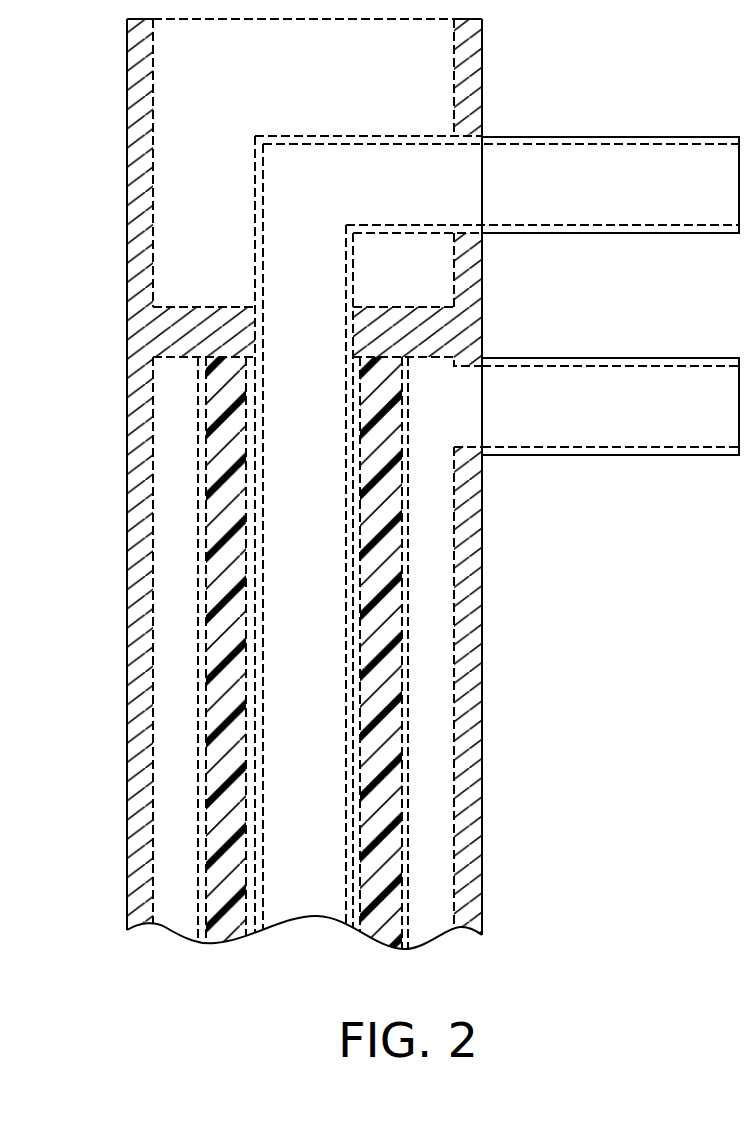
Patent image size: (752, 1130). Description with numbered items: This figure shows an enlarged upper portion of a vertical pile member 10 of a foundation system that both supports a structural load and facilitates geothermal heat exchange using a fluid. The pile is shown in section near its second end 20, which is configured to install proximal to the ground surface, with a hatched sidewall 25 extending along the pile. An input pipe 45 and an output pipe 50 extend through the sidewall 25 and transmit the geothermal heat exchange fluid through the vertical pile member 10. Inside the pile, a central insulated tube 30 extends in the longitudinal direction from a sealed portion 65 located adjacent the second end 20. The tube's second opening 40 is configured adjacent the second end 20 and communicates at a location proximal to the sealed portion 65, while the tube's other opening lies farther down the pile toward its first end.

The vertical pile member 10 is at (90, 521).
The second end 20 is at (77, 50).
The sidewall 25 is at (470, 735).
The central insulated tube 30 is at (230, 722).
The second opening 40 is at (296, 382).
The input pipe 45 is at (580, 137).
The output pipe 50 is at (580, 358).
The sealed portion 65 is at (156, 335).